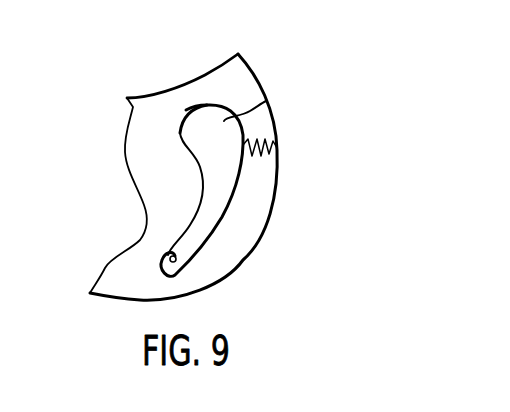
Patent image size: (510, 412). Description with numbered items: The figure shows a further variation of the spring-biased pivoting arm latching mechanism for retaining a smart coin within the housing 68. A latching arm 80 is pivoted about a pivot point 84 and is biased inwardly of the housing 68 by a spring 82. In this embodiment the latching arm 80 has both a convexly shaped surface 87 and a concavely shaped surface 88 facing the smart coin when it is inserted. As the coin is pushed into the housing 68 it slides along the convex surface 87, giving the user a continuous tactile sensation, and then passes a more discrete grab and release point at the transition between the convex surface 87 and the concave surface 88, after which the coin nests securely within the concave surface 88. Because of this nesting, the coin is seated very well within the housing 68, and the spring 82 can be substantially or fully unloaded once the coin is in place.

The housing 68 is at (248, 234).
The latching arm 80 is at (266, 101).
The spring 82 is at (248, 157).
The pivot point 84 is at (170, 257).
The convexly shaped surface 87 is at (190, 109).
The concavely shaped surface 88 is at (198, 164).